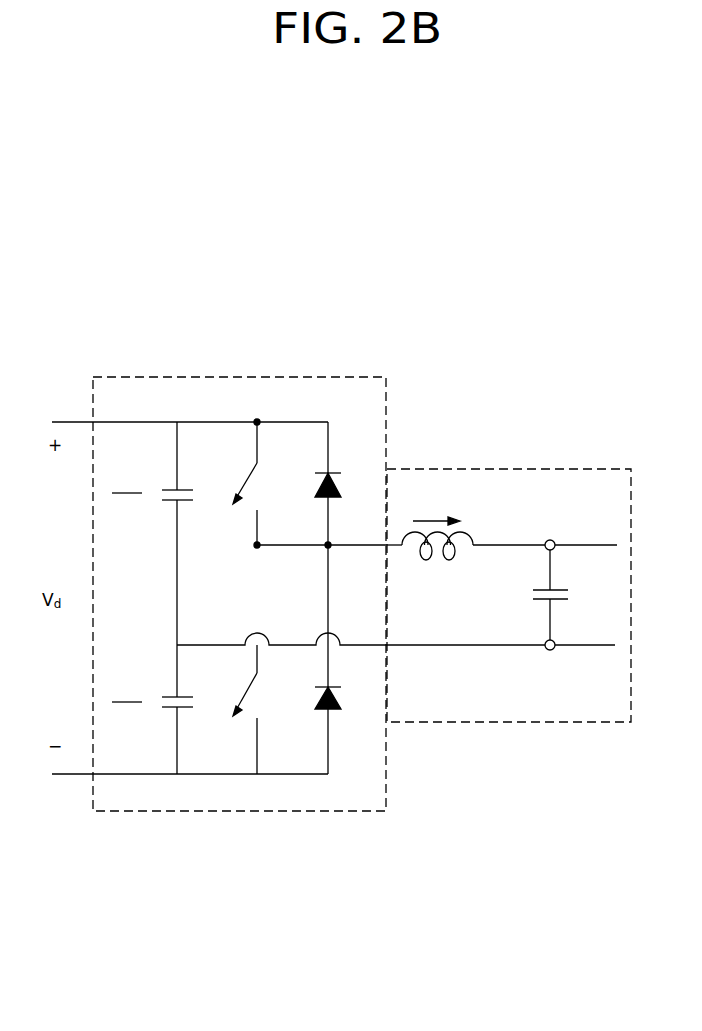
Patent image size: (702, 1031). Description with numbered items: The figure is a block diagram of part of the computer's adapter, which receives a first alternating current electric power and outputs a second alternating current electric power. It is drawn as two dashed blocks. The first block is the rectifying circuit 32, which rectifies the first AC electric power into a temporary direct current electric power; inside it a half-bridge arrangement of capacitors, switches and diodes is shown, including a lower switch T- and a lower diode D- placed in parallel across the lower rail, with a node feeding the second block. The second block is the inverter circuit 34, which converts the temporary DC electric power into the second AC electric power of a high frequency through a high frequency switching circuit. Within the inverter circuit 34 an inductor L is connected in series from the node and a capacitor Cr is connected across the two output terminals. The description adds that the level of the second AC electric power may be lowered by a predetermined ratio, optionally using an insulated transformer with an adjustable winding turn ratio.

The rectifying circuit 32 is at (236, 377).
The inverter circuit 34 is at (505, 469).
The lower switching transistor T- is at (257, 709).
The lower freewheeling diode D- is at (345, 699).
The resonant inductor L is at (437, 561).
The resonant capacitor Cr is at (567, 595).